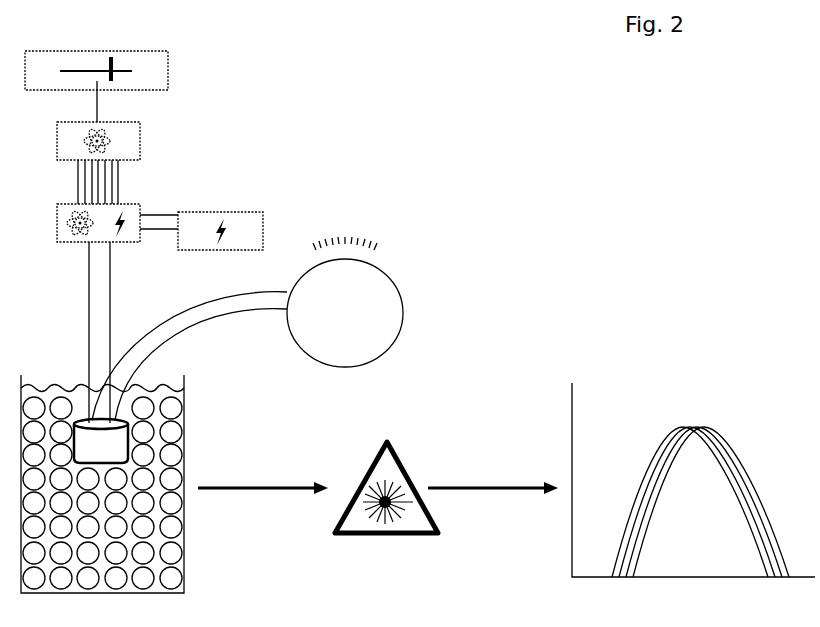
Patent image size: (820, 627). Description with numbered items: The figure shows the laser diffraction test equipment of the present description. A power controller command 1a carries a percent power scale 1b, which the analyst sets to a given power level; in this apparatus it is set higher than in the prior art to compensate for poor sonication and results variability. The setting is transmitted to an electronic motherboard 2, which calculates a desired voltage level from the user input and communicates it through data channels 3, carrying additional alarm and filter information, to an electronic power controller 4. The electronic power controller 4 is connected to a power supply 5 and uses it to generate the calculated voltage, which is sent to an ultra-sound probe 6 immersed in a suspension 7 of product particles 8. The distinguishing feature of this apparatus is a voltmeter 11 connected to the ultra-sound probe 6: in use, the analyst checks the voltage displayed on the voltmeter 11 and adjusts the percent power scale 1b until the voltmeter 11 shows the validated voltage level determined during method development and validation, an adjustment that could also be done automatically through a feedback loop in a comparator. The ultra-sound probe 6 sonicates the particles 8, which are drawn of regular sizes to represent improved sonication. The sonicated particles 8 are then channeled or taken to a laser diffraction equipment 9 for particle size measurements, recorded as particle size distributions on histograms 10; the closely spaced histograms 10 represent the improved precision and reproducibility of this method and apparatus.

The power controller command 1a is at (128, 51).
The percent power scale 1b is at (110, 60).
The electronic motherboard 2 is at (141, 143).
The data channels 3 is at (77, 190).
The electronic power controller 4 is at (147, 213).
The power supply 5 is at (243, 208).
The ultra-sound probe 6 is at (128, 425).
The suspension 7 is at (170, 515).
The particles 8 is at (170, 578).
The laser diffraction equipment 9 is at (403, 458).
The histograms 10 is at (728, 437).
The voltmeter 11 is at (400, 287).